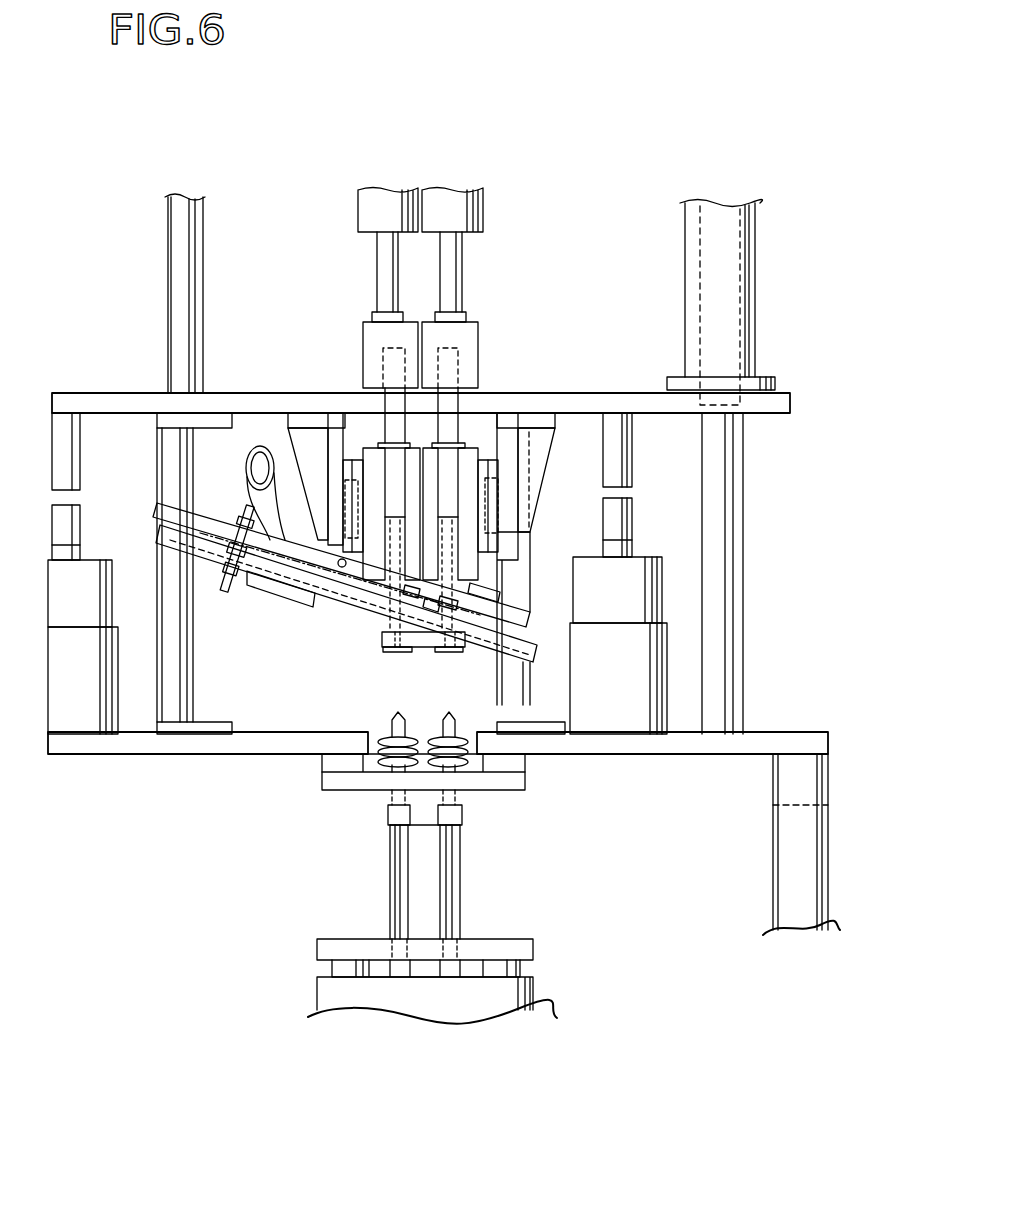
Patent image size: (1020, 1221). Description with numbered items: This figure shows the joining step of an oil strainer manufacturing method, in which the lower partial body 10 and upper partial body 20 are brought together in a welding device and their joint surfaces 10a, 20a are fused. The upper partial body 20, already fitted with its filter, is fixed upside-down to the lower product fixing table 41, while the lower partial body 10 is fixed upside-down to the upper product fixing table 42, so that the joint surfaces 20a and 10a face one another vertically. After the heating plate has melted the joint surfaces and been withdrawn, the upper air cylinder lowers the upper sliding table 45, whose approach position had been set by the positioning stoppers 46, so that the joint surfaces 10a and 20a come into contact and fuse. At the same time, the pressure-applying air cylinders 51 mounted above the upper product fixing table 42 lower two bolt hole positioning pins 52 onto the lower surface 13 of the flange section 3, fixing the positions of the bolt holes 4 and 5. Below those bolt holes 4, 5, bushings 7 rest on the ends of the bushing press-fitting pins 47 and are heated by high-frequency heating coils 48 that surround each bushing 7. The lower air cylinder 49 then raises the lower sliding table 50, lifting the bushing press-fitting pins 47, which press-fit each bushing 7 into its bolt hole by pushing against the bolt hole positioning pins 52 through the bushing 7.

The flange section 3 is at (473, 585).
The bolt hole 4 is at (445, 655).
The bolt hole 5 is at (388, 652).
The bushing 7 is at (445, 745).
The lower partial body 10 is at (247, 470).
The joint surface 10a is at (413, 592).
The lower surface 13 is at (427, 592).
The upper partial body 20 is at (358, 603).
The joint surface 20a is at (432, 603).
The lower product fixing table 41 is at (163, 543).
The upper product fixing table 42 is at (160, 508).
The upper sliding table 45 is at (93, 395).
The positioning stopper 46 is at (240, 505).
The bushing press-fitting pin 47 is at (458, 908).
The high-frequency heating coil 48 is at (470, 740).
The lower air cylinder 49 is at (513, 998).
The lower sliding table 50 is at (525, 948).
The pressure-applying air cylinder 51 is at (393, 200).
The bolt hole positioning pin 52 is at (395, 472).